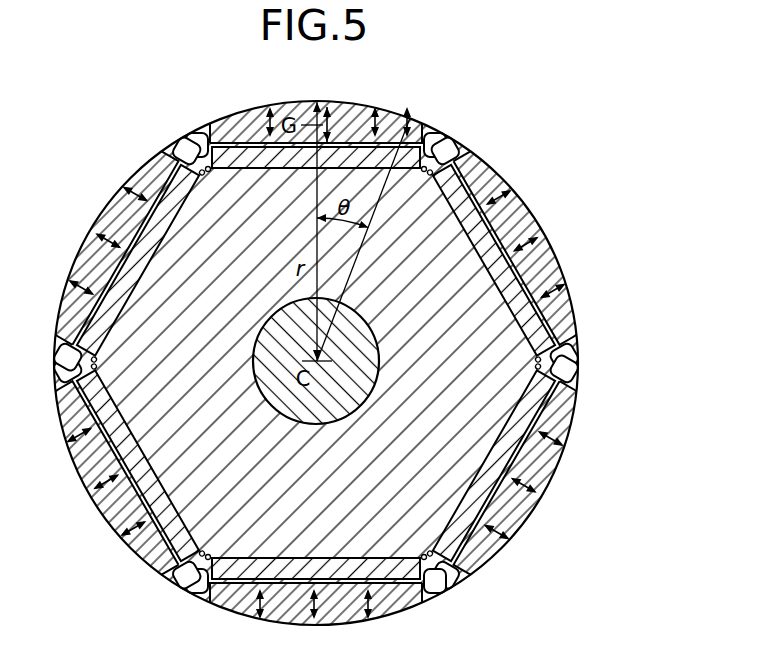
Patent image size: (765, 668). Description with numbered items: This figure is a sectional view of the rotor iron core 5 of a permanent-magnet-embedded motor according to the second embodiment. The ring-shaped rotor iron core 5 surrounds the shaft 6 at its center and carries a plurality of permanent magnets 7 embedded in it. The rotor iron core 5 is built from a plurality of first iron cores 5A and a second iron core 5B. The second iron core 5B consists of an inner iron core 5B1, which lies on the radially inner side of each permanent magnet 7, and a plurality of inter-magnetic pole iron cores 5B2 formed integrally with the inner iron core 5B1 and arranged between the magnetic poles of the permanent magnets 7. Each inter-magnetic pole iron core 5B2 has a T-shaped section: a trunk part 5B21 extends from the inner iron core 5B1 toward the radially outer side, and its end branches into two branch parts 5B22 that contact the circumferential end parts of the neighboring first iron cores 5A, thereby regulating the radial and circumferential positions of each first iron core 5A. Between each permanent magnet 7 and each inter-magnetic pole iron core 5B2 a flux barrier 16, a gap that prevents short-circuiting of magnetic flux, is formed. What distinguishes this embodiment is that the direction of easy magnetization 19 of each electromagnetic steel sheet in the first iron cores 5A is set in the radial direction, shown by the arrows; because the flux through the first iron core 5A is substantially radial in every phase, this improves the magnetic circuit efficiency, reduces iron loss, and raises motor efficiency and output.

The rotor iron core 5 is at (373, 344).
The first iron core 5A is at (558, 272).
The second iron core 5B is at (354, 358).
The inner iron core 5B1 is at (430, 232).
The inter-magnetic pole iron core 5B2 is at (327, 358).
The trunk part 5B21 is at (452, 142).
The branch part 5B22 is at (445, 126).
The shaft 6 is at (353, 381).
The permanent magnet 7 is at (260, 150).
The flux barrier 16 is at (204, 142).
The direction of easy magnetization 19 is at (140, 188).